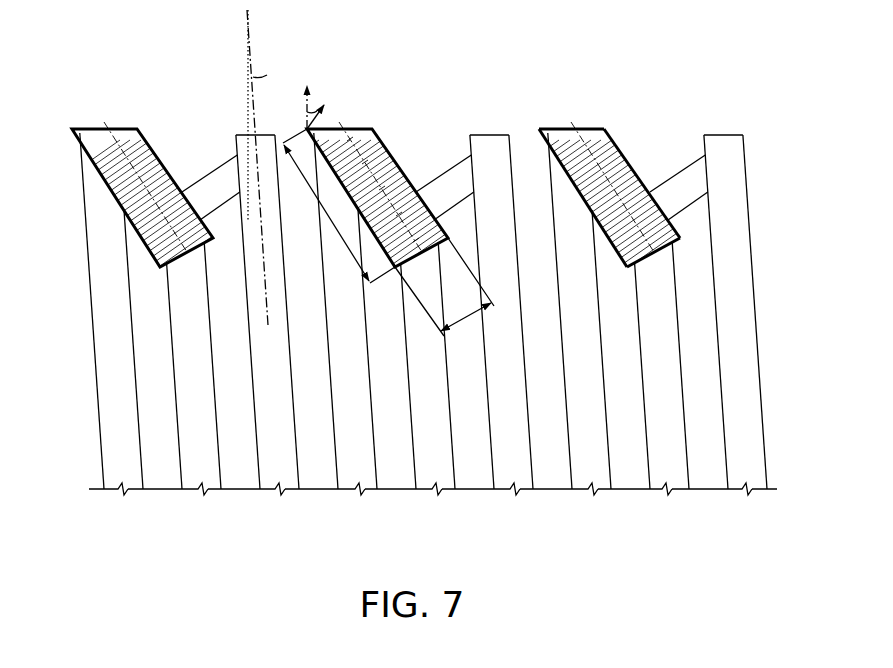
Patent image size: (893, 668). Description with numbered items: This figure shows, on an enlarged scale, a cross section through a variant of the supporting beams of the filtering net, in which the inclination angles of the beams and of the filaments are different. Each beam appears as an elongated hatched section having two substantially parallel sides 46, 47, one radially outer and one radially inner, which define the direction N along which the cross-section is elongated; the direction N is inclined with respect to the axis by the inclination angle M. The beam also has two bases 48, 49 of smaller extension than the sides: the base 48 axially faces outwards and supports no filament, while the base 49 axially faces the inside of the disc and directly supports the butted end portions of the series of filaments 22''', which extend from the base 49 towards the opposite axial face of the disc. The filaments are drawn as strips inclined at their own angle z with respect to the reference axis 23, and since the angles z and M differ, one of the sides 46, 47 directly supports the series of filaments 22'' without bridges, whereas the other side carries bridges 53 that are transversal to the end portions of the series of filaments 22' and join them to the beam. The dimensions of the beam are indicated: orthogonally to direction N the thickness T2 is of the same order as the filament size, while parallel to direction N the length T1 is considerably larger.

The series of filaments 22' is at (756, 312).
The series of filaments 22'' is at (598, 341).
The series of filaments 22''' is at (680, 395).
The longitudinal axis of strip 23 is at (269, 74).
The radially outer side of beam 46 is at (631, 157).
The radially inner side of beam 47 is at (578, 204).
The base of beam 48 is at (576, 125).
The base of beam 49 is at (654, 263).
The bridge 53 is at (692, 170).
The direction of elongation of beam cross-section N is at (314, 90).
The inclination angle of direction N M is at (330, 108).
The dimension parallel to direction N T1 is at (339, 206).
The dimension orthogonal to direction N T2 is at (444, 287).
The inclination angle of filaments z is at (244, 114).